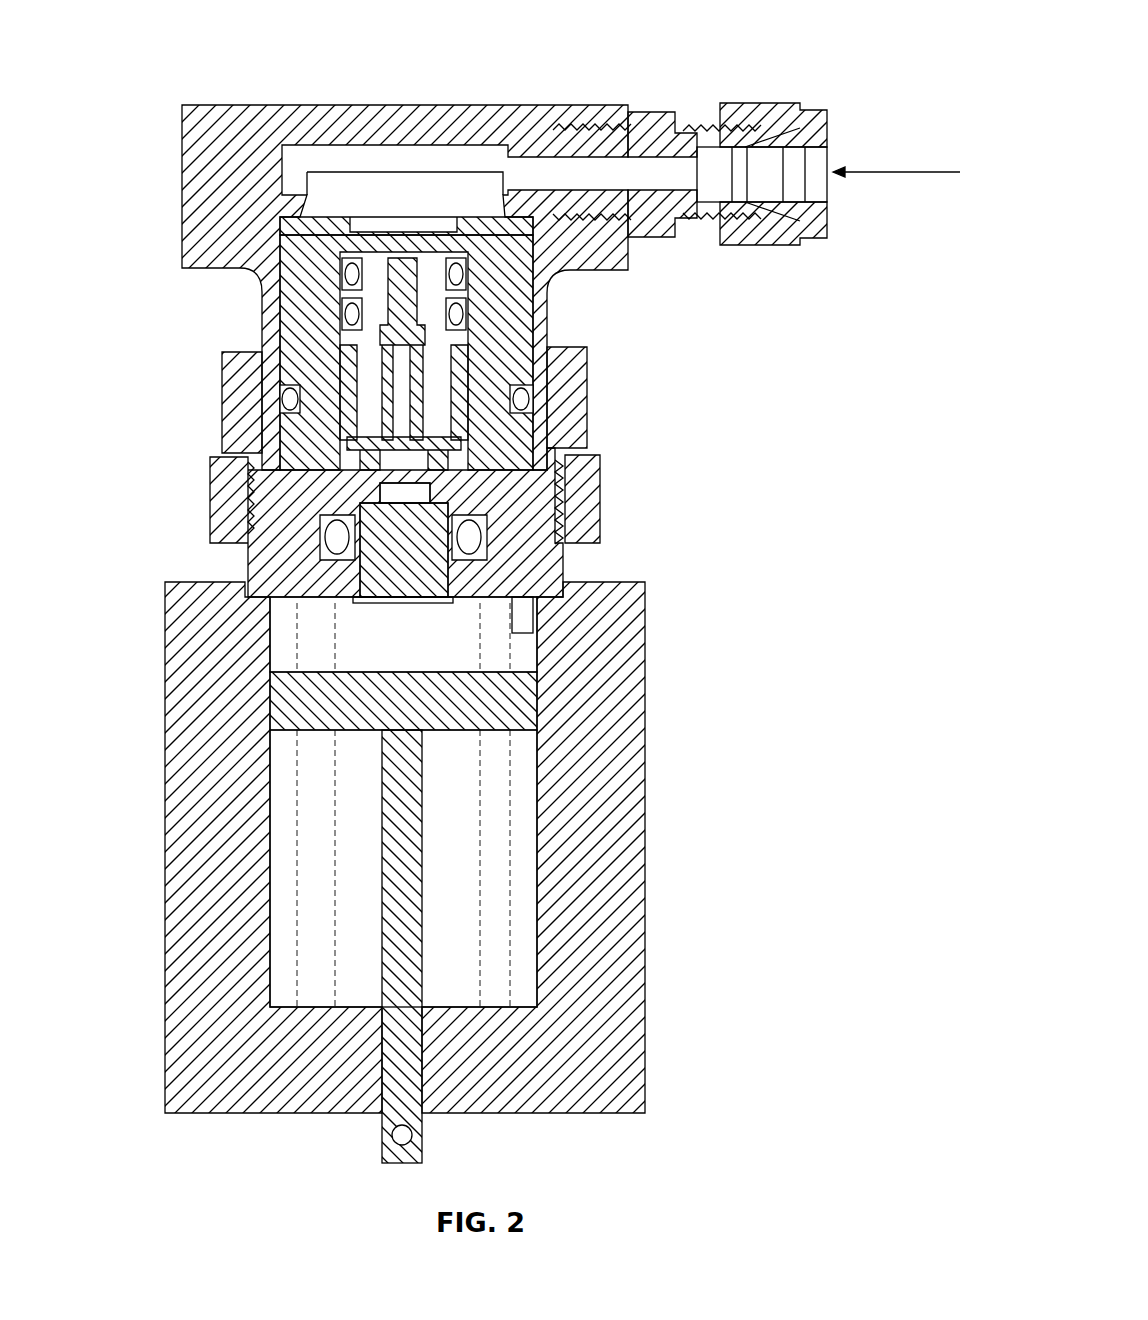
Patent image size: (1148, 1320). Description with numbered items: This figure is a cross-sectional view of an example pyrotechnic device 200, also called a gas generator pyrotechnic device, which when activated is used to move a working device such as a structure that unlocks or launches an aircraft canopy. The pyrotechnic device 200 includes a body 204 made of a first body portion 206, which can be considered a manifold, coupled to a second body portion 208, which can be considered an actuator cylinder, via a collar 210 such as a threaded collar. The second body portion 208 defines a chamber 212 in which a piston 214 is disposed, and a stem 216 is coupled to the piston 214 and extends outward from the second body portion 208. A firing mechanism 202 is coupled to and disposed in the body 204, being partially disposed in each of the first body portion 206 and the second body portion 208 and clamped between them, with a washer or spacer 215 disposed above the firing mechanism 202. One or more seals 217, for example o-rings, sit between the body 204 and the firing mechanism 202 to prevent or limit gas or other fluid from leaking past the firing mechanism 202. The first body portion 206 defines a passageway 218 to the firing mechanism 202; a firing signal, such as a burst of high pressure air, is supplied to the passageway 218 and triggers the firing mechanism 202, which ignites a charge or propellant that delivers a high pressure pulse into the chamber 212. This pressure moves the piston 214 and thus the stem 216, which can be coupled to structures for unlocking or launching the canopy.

The pyrotechnic device 200 is at (186, 63).
The firing mechanism 202 is at (262, 335).
The body 204 is at (190, 640).
The first body portion 206 is at (200, 203).
The second body portion 208 is at (190, 755).
The collar 210 is at (248, 487).
The chamber 212 is at (427, 652).
The piston 214 is at (487, 715).
The washer or spacer 215 is at (283, 228).
The stem 216 is at (400, 867).
The seals 217 is at (283, 396).
The passageway 218 is at (537, 143).